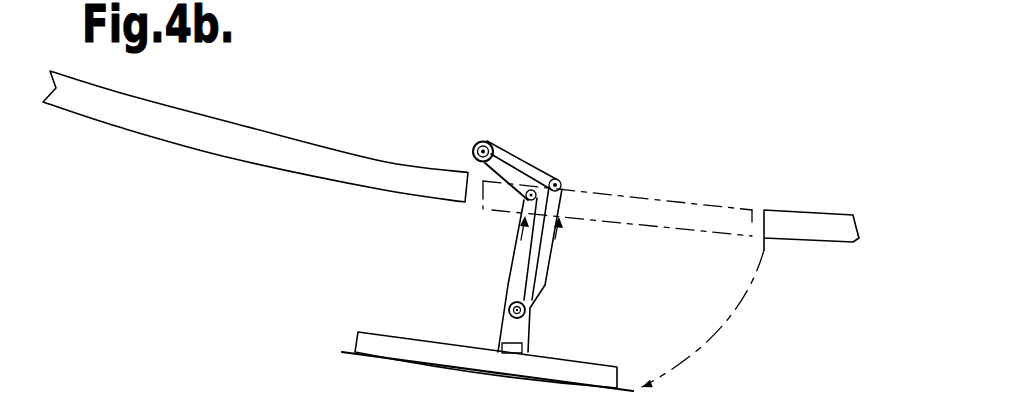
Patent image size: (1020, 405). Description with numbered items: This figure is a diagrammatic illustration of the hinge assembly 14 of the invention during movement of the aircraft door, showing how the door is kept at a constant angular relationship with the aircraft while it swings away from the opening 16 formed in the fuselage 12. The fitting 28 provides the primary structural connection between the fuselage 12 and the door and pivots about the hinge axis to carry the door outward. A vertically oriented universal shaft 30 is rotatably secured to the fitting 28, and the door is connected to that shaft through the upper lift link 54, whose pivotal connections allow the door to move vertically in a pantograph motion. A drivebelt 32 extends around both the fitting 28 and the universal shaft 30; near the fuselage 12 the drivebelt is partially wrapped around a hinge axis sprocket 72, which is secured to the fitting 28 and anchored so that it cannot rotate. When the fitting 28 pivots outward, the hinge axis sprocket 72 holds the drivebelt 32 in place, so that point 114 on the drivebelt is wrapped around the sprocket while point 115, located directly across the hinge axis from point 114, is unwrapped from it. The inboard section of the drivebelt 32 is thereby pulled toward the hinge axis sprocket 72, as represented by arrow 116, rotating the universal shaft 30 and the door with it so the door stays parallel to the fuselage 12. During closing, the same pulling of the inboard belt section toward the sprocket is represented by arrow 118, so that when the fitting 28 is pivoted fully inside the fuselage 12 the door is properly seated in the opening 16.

The fuselage 12 is at (192, 146).
The hinge assembly 14 is at (504, 148).
The opening 16 is at (757, 206).
The fitting 28 is at (513, 168).
The universal shaft 30 is at (507, 307).
The drivebelt 32 is at (578, 189).
The upper lift link 54 is at (516, 332).
The hinge axis sprocket 72 is at (473, 144).
The point 114 is at (486, 140).
The point 115 is at (487, 165).
The arrow 116 is at (548, 269).
The arrow 118 is at (510, 270).